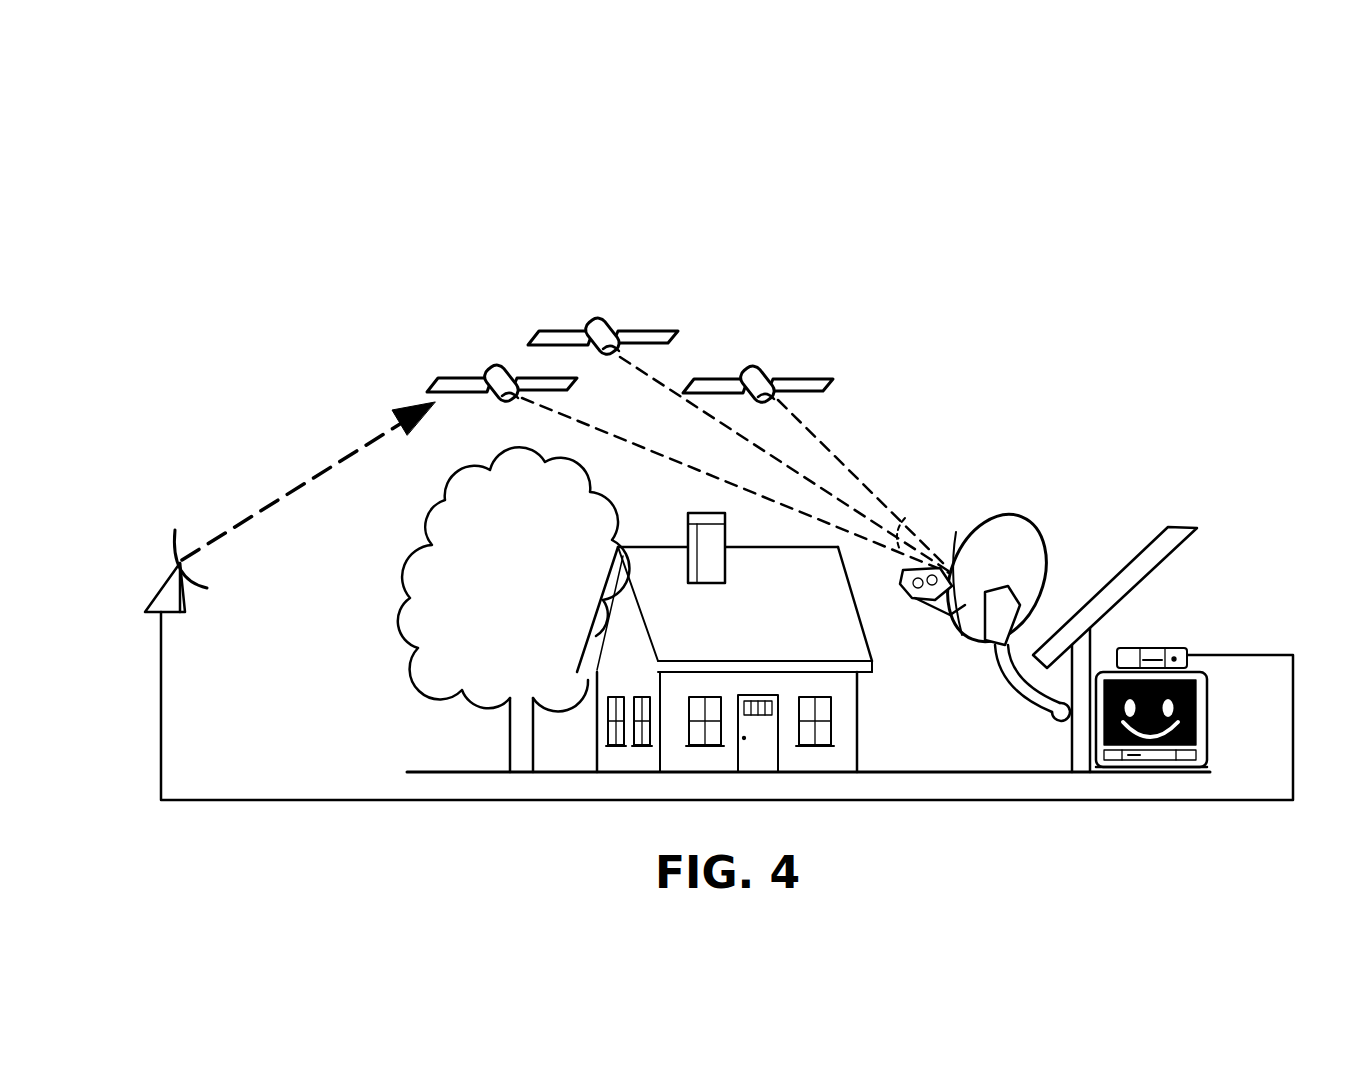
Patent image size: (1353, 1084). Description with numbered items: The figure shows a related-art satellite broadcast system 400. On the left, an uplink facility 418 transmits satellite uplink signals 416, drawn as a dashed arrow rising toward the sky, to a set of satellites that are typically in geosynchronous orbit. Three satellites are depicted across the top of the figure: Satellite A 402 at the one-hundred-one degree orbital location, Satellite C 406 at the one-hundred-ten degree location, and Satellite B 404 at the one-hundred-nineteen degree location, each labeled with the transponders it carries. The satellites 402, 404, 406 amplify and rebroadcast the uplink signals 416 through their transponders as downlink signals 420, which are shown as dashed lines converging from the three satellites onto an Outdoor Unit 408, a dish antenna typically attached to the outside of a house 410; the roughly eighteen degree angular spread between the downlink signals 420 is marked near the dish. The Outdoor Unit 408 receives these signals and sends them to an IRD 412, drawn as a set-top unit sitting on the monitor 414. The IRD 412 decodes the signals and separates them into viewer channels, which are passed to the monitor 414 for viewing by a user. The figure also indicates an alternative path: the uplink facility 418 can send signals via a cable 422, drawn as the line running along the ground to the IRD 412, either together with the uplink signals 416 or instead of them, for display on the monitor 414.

The satellite broadcast system 400 is at (722, 165).
The Satellite A 402 is at (498, 358).
The Satellite B 404 is at (775, 368).
The Satellite C 406 is at (645, 322).
The Outdoor Unit 408 is at (1008, 515).
The house 410 is at (1140, 552).
The IRD 412 is at (1153, 648).
The monitor 414 is at (1210, 705).
The satellite uplink signals 416 is at (308, 478).
The uplink facility 418 is at (165, 580).
The downlink signals 420 is at (897, 495).
The cable 422 is at (1228, 654).